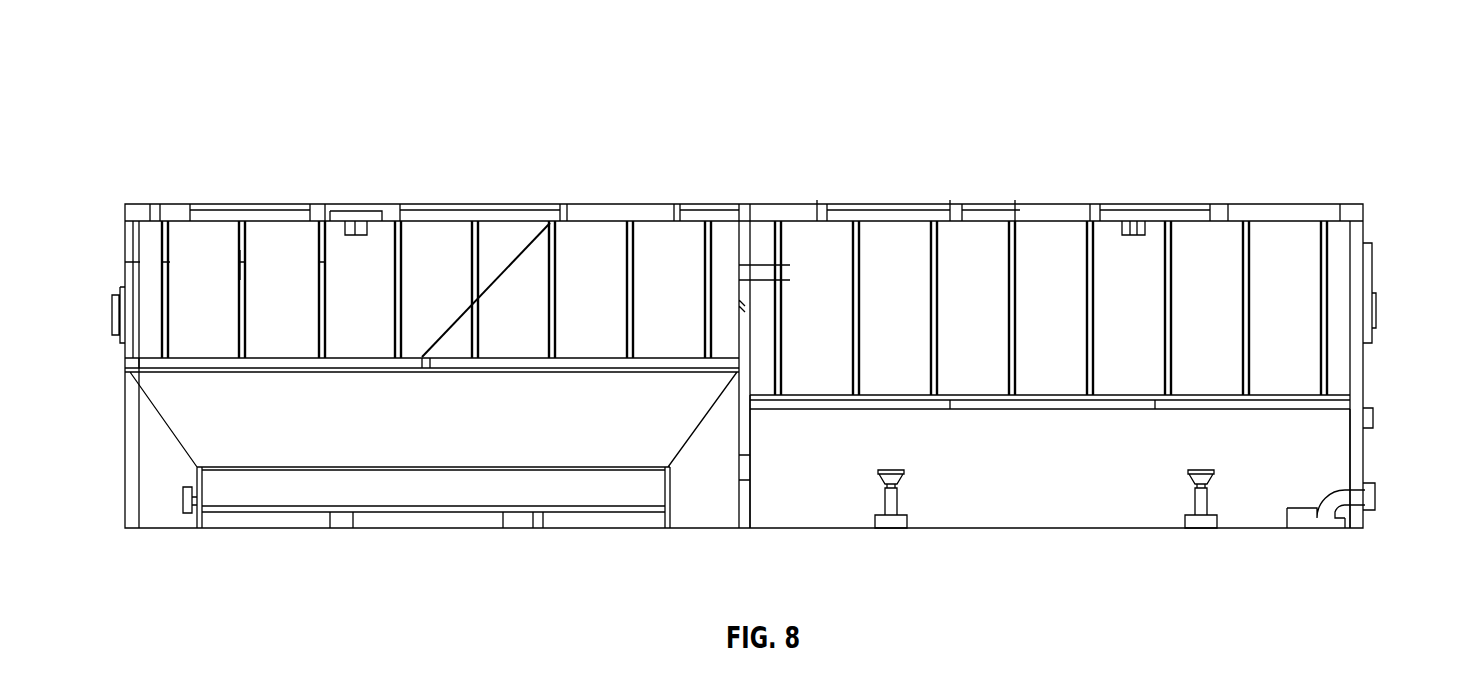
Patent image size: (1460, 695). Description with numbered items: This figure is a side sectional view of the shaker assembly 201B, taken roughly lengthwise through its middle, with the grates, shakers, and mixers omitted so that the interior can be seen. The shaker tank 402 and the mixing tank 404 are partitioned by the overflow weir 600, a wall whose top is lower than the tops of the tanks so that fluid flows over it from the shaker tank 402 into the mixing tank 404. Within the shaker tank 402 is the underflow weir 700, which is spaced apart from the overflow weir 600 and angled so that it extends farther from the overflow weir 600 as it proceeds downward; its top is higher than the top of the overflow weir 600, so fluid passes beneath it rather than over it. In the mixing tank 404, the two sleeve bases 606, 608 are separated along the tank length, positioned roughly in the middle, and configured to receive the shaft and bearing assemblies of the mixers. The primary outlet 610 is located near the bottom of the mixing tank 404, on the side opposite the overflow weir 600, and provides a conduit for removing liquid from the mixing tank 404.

The shaker assembly 201B is at (226, 77).
The underflow weir 700 is at (517, 255).
The overflow weir 600 is at (745, 235).
The shaker tank 402 is at (190, 418).
The mixing tank 404 is at (1318, 443).
The sleeve base 606 is at (880, 500).
The sleeve base 608 is at (1212, 498).
The primary outlet 610 is at (1298, 520).